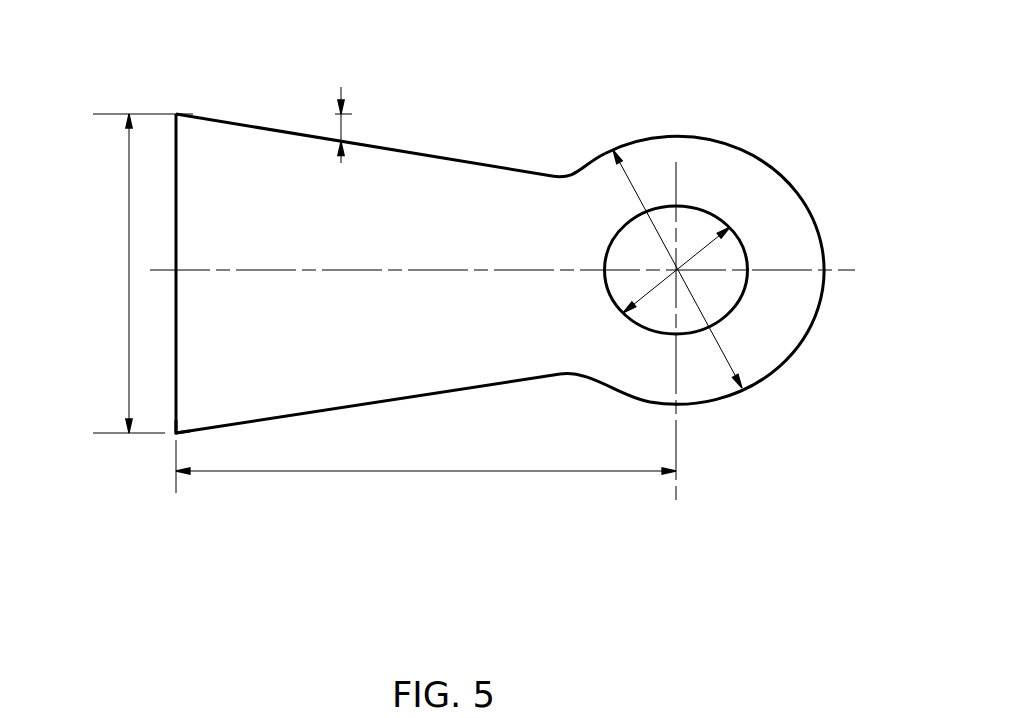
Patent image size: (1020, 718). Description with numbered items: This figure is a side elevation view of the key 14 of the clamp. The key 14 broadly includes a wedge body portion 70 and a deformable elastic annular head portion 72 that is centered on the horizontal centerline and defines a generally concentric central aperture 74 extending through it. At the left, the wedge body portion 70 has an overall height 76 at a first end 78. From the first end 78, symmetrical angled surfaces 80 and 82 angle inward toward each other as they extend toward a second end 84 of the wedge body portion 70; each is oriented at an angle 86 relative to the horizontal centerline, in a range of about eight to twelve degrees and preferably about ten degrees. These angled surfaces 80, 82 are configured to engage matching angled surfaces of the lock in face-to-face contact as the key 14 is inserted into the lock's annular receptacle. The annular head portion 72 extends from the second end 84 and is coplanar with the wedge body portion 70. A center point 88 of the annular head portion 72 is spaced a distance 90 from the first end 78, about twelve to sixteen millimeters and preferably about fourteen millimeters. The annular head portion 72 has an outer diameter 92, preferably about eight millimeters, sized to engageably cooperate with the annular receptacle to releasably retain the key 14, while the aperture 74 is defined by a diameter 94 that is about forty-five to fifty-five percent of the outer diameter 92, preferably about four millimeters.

The key 14 is at (478, 271).
The wedge body portion 70 is at (188, 135).
The deformable elastic annular head portion 72 is at (752, 178).
The central aperture 74 is at (738, 307).
The overall height 76 is at (129, 255).
The first end 78 is at (160, 447).
The angled surface 80 is at (512, 167).
The angled surface 82 is at (445, 392).
The second end 84 is at (550, 387).
The angle 86 is at (342, 127).
The center point 88 is at (667, 263).
The distance 90 is at (287, 470).
The outer diameter 92 is at (740, 390).
The diameter 94 is at (728, 229).